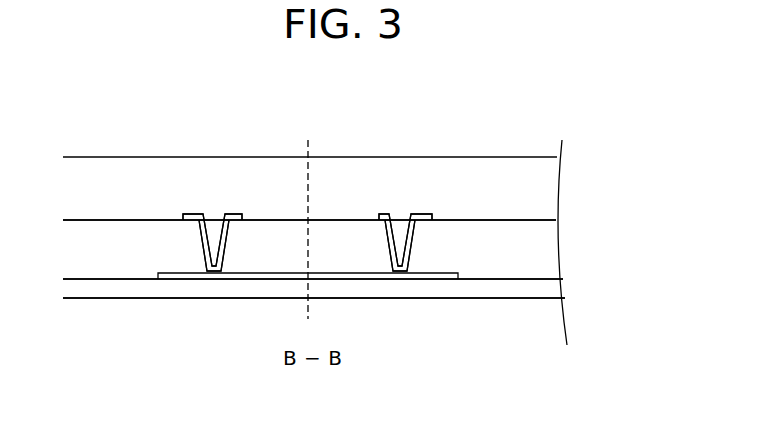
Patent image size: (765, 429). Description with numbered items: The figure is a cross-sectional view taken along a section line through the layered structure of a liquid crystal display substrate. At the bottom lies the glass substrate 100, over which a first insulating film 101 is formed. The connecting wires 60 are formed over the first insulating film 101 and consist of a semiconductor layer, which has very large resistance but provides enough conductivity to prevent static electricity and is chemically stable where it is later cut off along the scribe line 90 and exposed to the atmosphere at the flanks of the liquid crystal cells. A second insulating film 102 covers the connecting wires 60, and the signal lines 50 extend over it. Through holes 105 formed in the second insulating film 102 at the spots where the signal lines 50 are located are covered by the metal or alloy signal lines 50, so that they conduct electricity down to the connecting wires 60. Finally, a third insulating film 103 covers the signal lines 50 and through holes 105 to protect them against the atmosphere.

The signal line 50 is at (203, 242).
The connecting wire 60 is at (360, 280).
The scribe line 90 is at (309, 142).
The glass substrate 100 is at (550, 323).
The first insulating film 101 is at (552, 292).
The second insulating film 102 is at (545, 253).
The third insulating film 103 is at (538, 180).
The through hole 105 is at (212, 213).